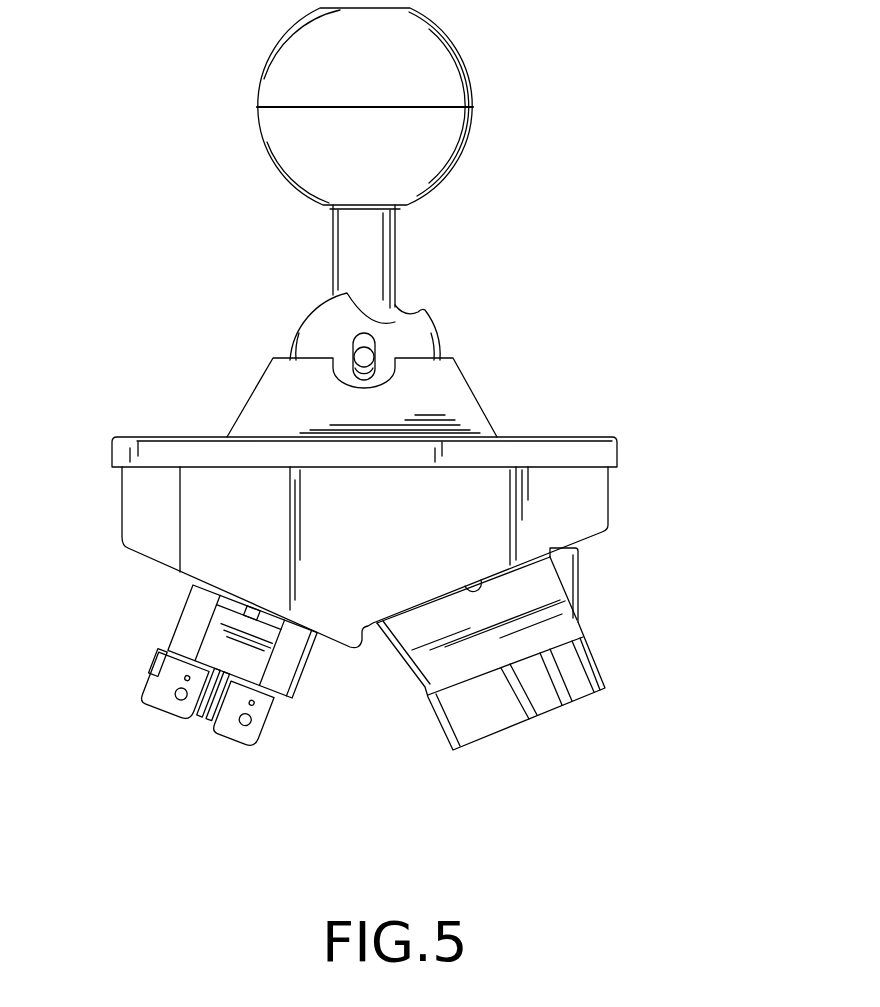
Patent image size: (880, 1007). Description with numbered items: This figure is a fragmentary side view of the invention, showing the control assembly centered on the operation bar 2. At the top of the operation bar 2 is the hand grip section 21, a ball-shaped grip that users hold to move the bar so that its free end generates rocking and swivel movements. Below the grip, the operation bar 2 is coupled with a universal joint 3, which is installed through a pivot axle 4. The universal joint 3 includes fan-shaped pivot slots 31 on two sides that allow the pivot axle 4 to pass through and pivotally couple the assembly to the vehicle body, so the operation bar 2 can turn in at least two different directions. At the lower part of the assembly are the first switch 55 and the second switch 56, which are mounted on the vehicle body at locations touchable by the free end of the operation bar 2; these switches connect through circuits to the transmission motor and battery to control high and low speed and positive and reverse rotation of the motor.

The hand grip section 21 is at (313, 66).
The operation bar 2 is at (393, 238).
The universal joint 3 is at (403, 337).
The fan-shaped pivot slot 31 is at (358, 340).
The pivot axle 4 is at (355, 356).
The second switch 56 is at (177, 622).
The first switch 55 is at (557, 623).